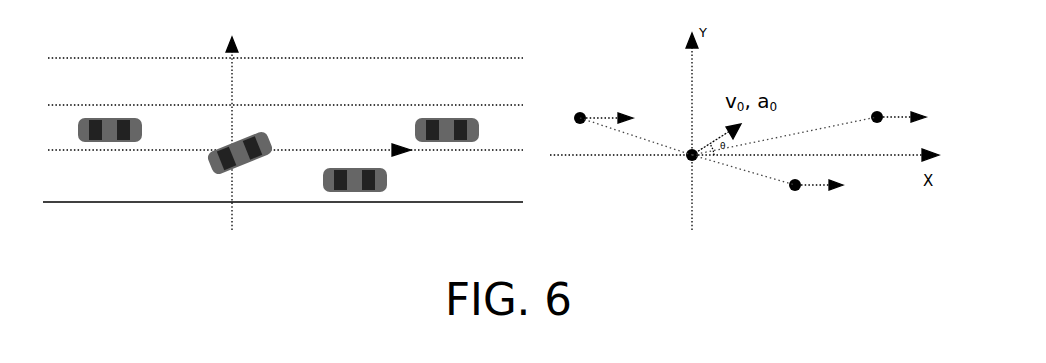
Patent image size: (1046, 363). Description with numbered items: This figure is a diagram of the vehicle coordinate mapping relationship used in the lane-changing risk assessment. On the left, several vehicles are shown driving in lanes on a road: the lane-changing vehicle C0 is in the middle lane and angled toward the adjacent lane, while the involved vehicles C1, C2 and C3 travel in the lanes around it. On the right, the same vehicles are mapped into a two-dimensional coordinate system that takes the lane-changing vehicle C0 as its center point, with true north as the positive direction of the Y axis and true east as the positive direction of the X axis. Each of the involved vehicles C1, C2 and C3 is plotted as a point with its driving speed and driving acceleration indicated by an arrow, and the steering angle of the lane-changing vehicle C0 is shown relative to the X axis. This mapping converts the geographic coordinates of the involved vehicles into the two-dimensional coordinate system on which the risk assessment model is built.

The lane-changing vehicle C0 is at (452, 170).
The involved vehicle C1 is at (602, 191).
The involved vehicle C2 is at (682, 134).
The involved vehicle C3 is at (385, 134).